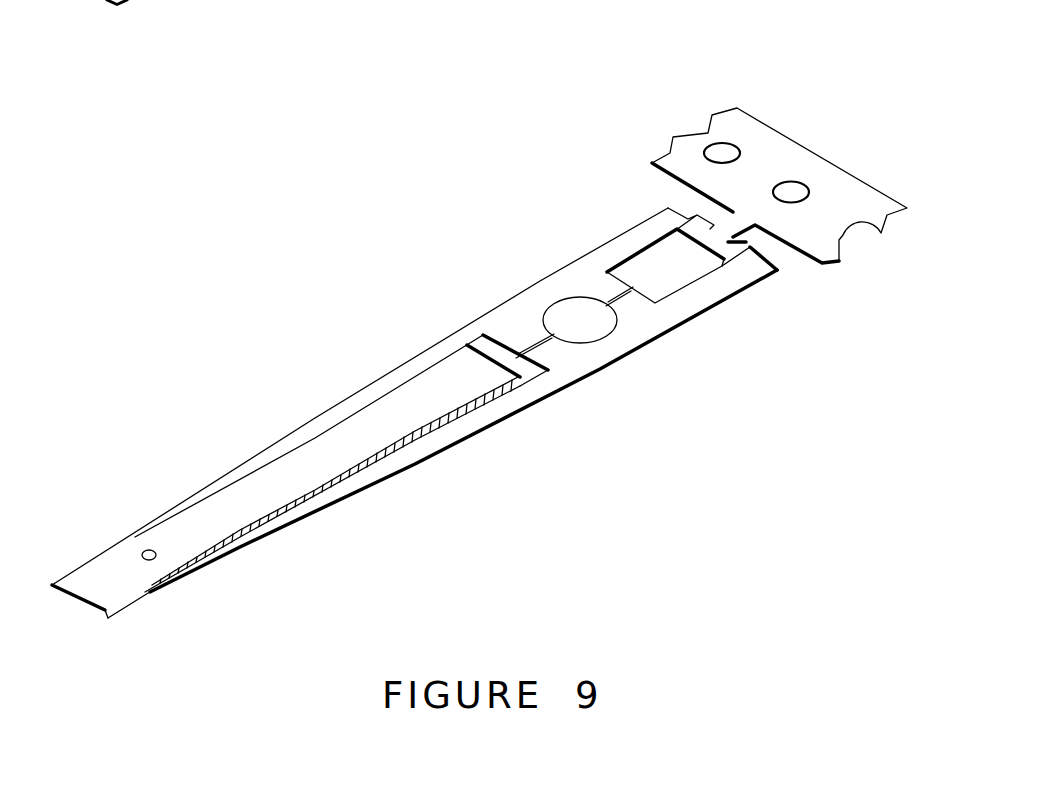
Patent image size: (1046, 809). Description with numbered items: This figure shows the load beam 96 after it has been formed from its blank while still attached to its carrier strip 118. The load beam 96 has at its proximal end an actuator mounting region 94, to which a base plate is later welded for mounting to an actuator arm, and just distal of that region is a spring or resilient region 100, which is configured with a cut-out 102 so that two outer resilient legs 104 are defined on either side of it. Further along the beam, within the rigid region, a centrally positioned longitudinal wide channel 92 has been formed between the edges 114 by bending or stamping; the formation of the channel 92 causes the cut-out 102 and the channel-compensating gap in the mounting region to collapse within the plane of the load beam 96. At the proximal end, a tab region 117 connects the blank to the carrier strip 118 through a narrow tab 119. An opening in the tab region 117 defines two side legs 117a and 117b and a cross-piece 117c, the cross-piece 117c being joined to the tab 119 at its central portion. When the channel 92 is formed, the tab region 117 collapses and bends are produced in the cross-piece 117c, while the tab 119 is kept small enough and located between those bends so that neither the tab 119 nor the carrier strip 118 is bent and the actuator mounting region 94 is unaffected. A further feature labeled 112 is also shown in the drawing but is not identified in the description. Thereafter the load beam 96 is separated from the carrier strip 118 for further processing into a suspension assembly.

The wide channel 92 is at (312, 463).
The actuator mounting region 94 is at (597, 278).
The load beam 96 is at (360, 388).
The spring or resilient region 100 is at (473, 315).
The cut-out 102 is at (510, 358).
The outer resilient legs 104 is at (467, 337).
The serrated edge 112 is at (210, 493).
The edges 114 is at (249, 458).
The tab region 117 is at (695, 322).
The side leg 117a is at (643, 233).
The side leg 117b is at (713, 290).
The cross-piece 117c is at (746, 243).
The carrier strip 118 is at (765, 140).
The tab 119 is at (735, 221).